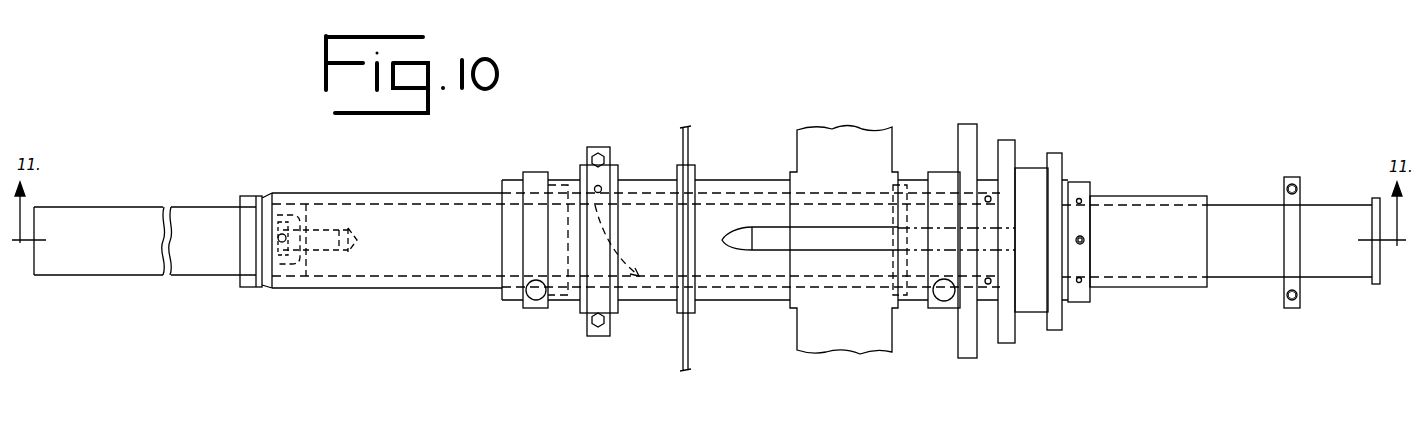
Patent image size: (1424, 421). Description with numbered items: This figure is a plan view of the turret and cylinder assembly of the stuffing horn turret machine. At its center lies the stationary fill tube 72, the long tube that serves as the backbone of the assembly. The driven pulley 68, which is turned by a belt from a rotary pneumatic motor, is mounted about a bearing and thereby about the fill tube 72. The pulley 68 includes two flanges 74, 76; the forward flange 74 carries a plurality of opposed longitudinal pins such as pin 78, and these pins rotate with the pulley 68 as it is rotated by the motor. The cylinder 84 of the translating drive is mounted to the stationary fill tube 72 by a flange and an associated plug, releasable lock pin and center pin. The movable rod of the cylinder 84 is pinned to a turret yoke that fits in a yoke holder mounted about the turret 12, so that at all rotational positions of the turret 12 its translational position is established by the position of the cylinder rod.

The turret 12 is at (713, 186).
The driven pulley 68 is at (1030, 168).
The fill tube 72 is at (396, 213).
The forward flange 74 is at (1008, 344).
The flange 76 is at (1057, 332).
The longitudinal pin 78 is at (781, 242).
The cylinder 84 is at (181, 265).